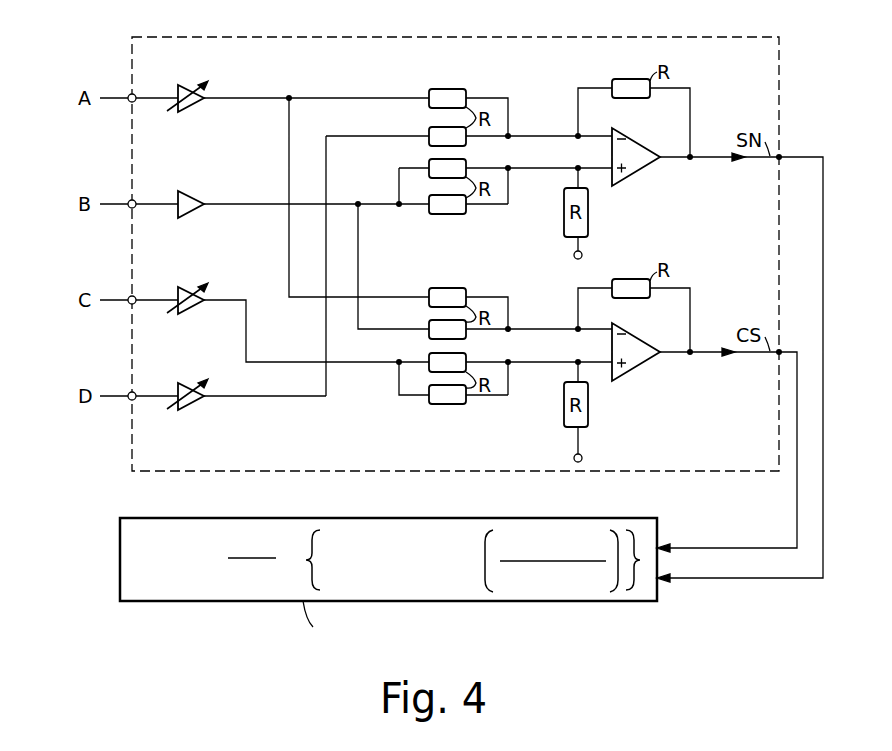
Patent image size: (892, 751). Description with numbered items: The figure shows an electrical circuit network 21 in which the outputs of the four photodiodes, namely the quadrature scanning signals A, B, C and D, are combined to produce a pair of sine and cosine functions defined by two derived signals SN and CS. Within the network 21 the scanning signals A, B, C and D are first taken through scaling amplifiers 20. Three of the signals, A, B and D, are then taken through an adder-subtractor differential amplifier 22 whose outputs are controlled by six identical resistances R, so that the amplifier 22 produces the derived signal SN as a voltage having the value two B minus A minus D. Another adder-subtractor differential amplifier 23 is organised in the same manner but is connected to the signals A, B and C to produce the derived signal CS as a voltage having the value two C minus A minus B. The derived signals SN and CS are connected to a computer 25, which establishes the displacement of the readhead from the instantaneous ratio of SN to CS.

The scaling amplifiers 20 is at (191, 68).
The circuit network 21 is at (471, 37).
The adder-subtractor differential amplifier 22 is at (657, 162).
The adder-subtractor differential amplifier 23 is at (657, 357).
The computer 25 is at (517, 606).